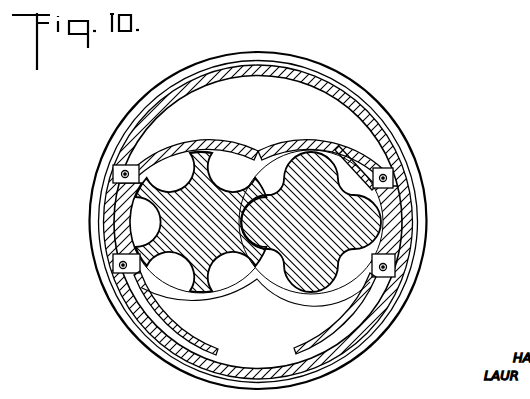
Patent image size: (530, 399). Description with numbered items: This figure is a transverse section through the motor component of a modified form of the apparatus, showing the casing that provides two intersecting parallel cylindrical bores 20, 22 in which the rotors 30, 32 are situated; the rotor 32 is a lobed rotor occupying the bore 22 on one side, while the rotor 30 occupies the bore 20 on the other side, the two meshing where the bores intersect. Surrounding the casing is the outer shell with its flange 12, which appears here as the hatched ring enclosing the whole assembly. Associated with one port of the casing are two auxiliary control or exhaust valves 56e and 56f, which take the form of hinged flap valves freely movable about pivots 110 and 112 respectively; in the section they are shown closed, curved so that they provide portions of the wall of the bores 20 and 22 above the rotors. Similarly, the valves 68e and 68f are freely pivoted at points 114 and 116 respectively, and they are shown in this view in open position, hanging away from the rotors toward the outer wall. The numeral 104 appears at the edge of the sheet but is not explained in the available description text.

The pump housing 104 is at (522, 4).
The flange 12 is at (282, 80).
The cylindrical bore 22 is at (136, 219).
The rotor 32 is at (232, 157).
The rotor 30 is at (307, 162).
The auxiliary control or exhaust valve 56f is at (205, 126).
The auxiliary control or exhaust valve 56e is at (327, 142).
The cylindrical bore 20 is at (353, 160).
The pivot 112 is at (121, 174).
The pivot 110 is at (387, 178).
The pivot point 116 is at (119, 265).
The pivot point 114 is at (387, 266).
The valve 68f is at (212, 347).
The valve 68e is at (311, 343).